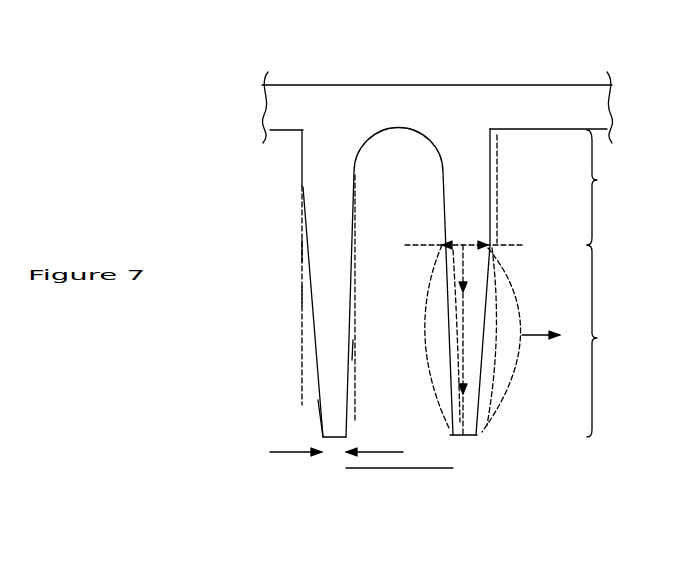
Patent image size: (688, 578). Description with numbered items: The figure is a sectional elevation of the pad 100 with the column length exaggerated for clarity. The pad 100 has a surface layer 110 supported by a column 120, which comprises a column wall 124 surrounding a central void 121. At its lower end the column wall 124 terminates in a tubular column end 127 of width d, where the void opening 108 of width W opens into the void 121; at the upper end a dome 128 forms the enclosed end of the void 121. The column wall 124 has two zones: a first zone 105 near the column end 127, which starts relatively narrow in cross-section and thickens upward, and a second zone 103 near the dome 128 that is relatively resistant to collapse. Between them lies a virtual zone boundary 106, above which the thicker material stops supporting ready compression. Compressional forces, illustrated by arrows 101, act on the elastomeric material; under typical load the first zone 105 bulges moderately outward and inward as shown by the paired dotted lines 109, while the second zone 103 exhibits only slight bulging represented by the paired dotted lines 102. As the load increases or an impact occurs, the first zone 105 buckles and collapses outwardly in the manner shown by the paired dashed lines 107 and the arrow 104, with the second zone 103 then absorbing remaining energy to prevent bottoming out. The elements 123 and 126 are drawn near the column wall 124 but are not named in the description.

The pad 100 is at (487, 55).
The arrows 101 is at (472, 438).
The paired dotted lines 102 is at (498, 178).
The second zone 103 is at (611, 187).
The arrow 104 is at (536, 341).
The first zone 105 is at (611, 341).
The virtual zone boundary 106 is at (500, 241).
The paired dashed lines 107 is at (506, 396).
The void opening 108 is at (398, 468).
The paired dotted lines 109 is at (423, 330).
The surface layer 110 is at (332, 86).
The column 120 is at (302, 211).
The central void 121 is at (383, 205).
The membrane wall 123 is at (357, 350).
The column wall 124 is at (302, 252).
The original wall position 126 is at (302, 296).
The column end 127 is at (322, 437).
The dome 128 is at (395, 130).